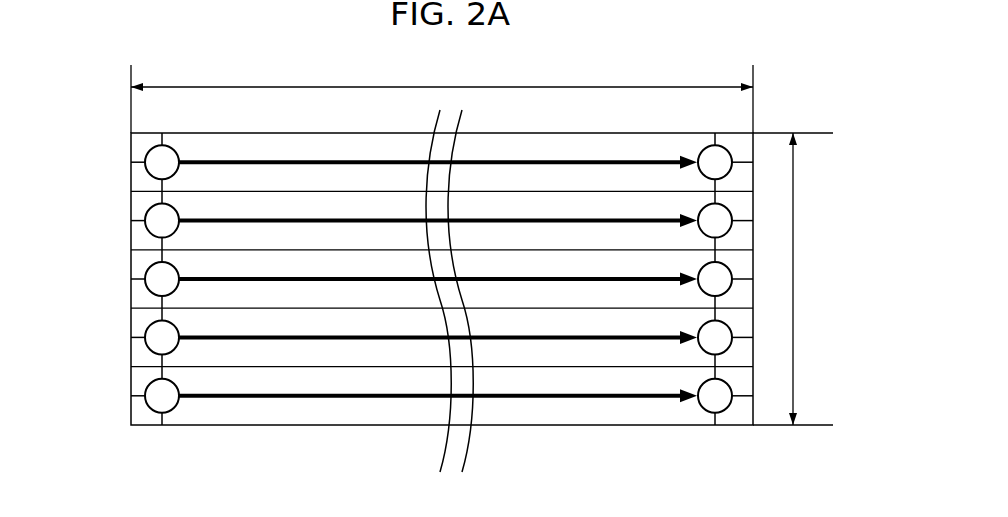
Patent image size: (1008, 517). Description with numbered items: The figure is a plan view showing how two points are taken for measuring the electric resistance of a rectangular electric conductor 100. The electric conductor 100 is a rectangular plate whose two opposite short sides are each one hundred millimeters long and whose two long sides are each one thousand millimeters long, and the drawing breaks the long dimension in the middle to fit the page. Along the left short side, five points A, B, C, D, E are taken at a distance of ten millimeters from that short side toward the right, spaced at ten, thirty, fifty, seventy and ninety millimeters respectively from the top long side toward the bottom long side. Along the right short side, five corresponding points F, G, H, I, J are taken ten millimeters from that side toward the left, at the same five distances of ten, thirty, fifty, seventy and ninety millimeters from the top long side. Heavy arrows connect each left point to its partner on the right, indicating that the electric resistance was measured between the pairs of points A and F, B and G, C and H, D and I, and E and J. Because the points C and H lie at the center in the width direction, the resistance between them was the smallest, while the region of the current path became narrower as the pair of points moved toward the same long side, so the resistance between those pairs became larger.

The electric conductor 100 is at (532, 416).
The point A is at (162, 162).
The point B is at (162, 221).
The point C is at (162, 279).
The point D is at (162, 337).
The point E is at (162, 396).
The point F is at (715, 162).
The point G is at (715, 221).
The point H is at (715, 279).
The point I is at (715, 337).
The point J is at (715, 396).